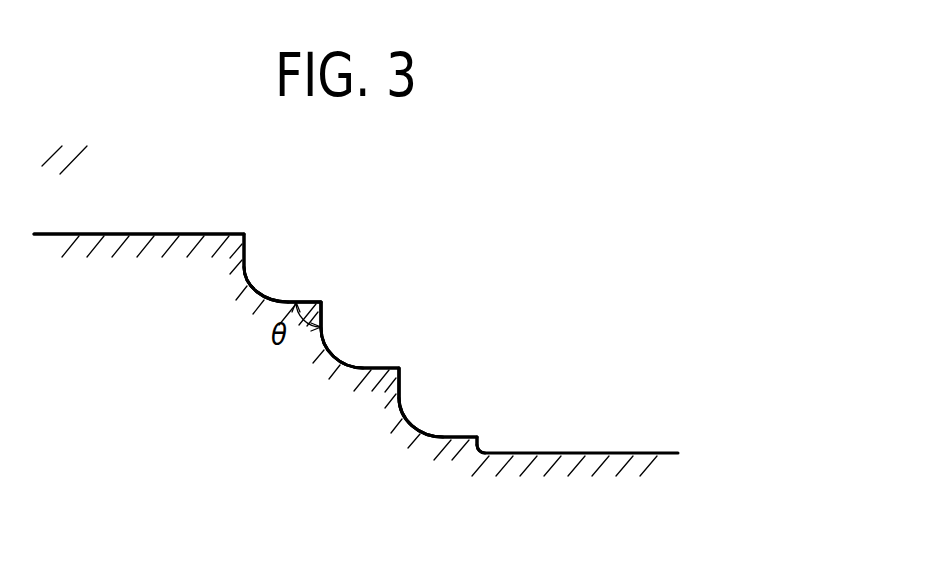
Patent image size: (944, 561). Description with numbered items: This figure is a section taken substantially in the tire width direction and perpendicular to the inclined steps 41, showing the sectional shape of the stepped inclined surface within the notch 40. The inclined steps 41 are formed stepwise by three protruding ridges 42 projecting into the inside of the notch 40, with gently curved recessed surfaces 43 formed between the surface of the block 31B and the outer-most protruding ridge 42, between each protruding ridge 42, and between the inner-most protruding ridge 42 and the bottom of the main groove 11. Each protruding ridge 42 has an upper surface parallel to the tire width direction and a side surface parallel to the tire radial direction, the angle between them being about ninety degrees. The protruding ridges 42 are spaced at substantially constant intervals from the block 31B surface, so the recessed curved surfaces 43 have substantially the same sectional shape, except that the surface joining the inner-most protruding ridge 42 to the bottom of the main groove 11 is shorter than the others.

The main groove 11 is at (621, 291).
The block 31B is at (140, 240).
The notch 40 is at (428, 277).
The inclined steps 41 is at (300, 300).
The protruding ridge 42 is at (322, 300).
The recessed curved surface 43 is at (252, 288).